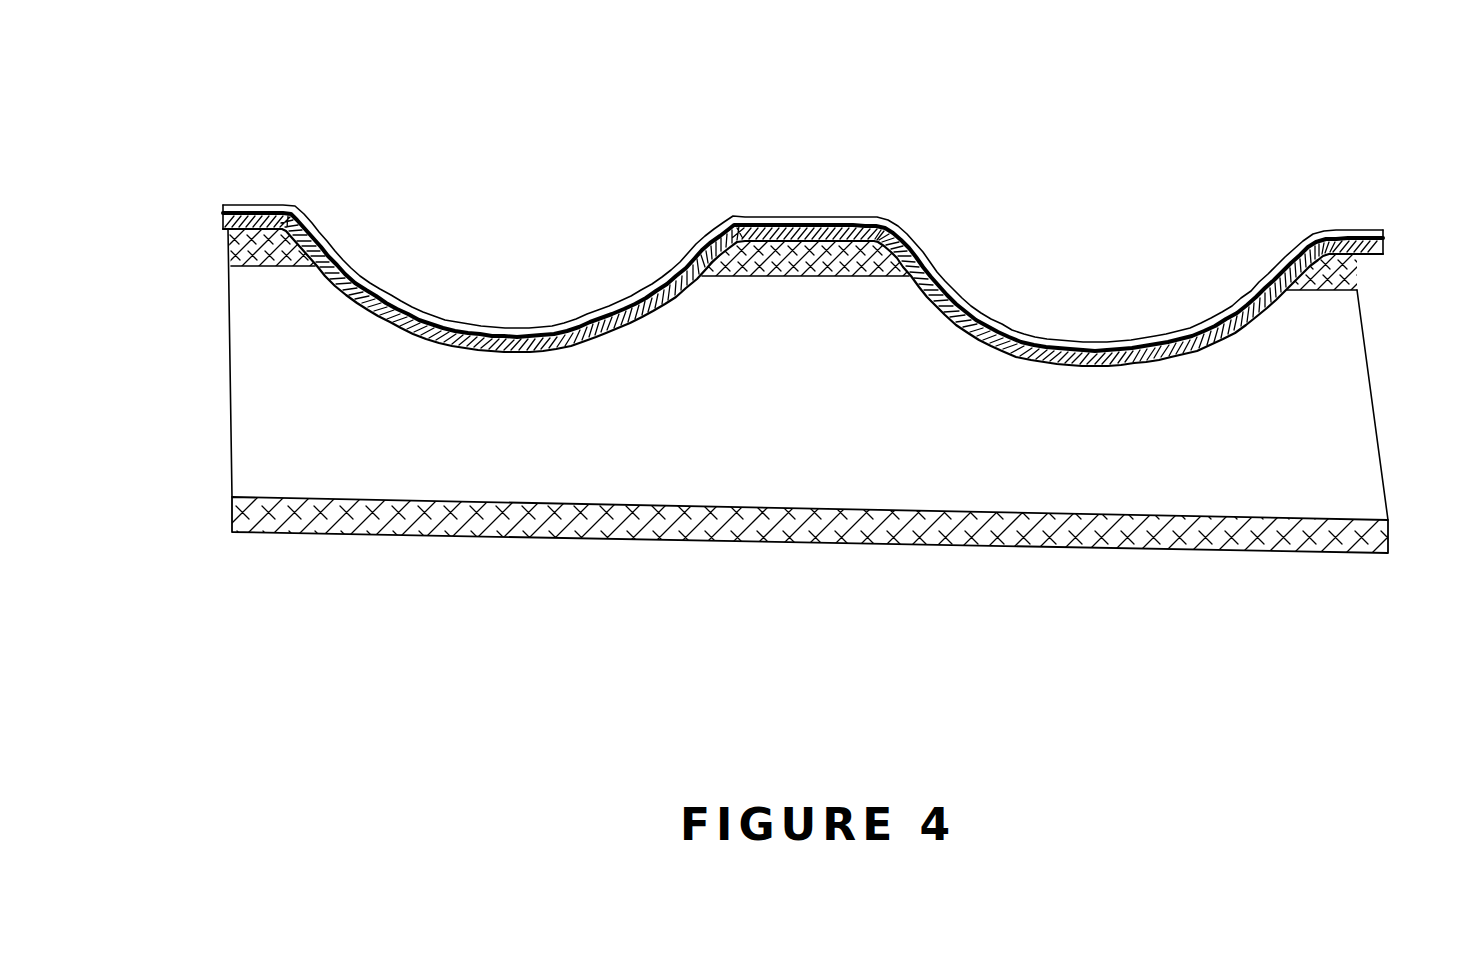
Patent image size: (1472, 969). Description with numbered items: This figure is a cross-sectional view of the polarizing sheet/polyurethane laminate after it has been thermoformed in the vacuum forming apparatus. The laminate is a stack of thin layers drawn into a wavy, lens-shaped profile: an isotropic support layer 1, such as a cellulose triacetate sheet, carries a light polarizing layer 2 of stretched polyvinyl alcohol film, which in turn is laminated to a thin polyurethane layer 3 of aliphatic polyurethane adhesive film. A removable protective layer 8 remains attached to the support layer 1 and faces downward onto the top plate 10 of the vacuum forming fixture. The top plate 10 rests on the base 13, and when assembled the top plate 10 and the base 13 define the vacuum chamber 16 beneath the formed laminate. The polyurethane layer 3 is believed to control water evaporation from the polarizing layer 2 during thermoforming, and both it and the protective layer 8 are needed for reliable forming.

The isotropic support layer 1 is at (413, 338).
The light polarizing layer 2 is at (258, 205).
The polyurethane layer 3 is at (468, 318).
The protective layer 8 is at (1190, 358).
The top plate of vacuum forming apparatus 10 is at (878, 219).
The base of vacuum chamber 13 is at (768, 533).
The vacuum chamber 16 is at (1105, 465).